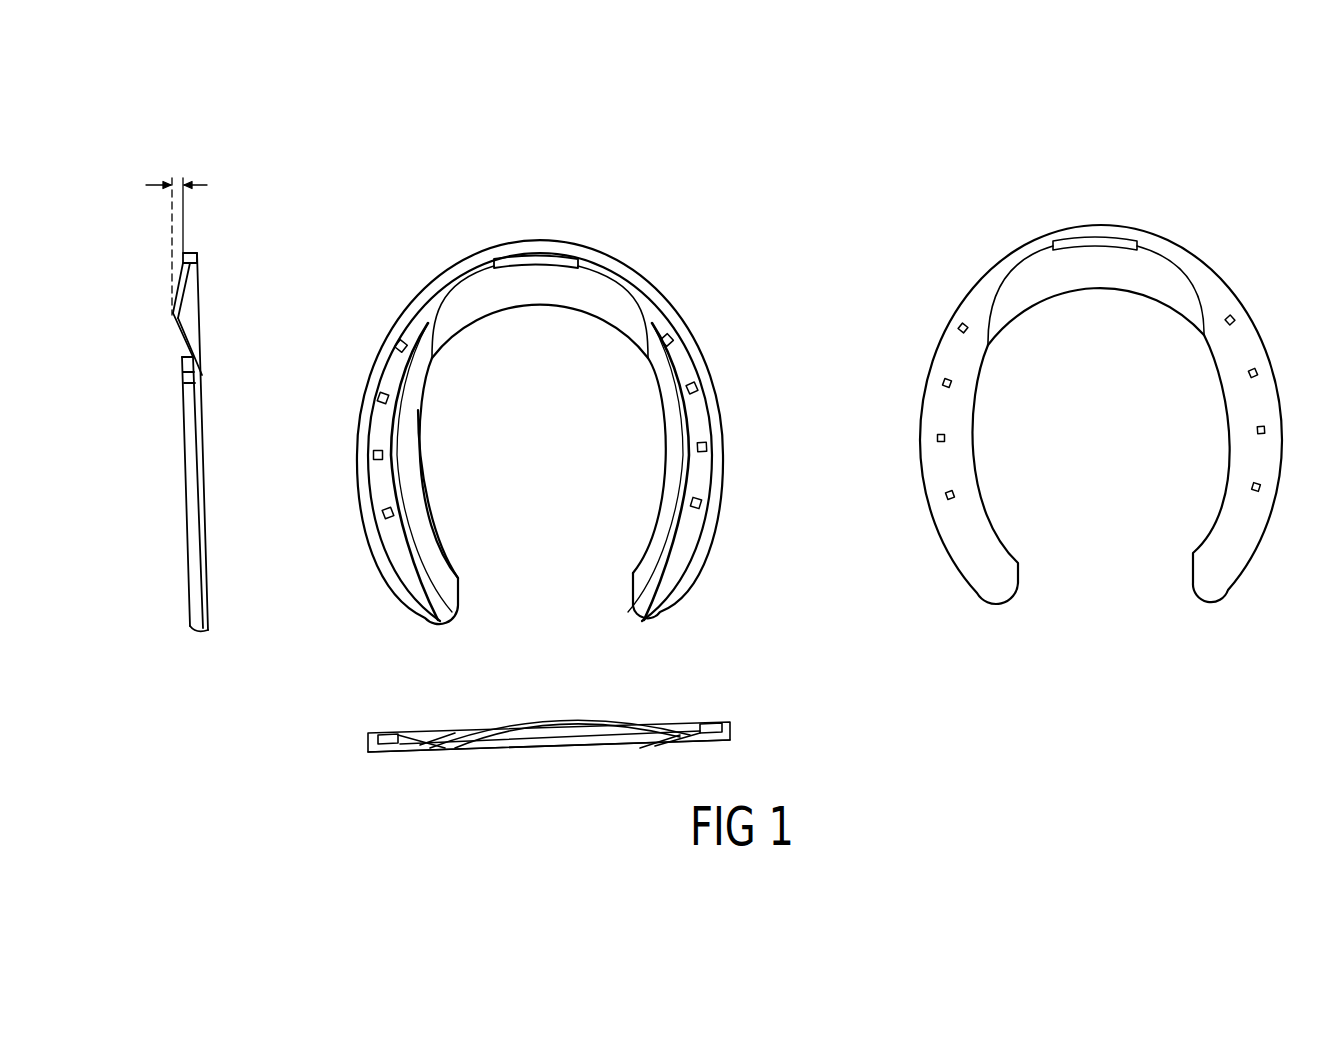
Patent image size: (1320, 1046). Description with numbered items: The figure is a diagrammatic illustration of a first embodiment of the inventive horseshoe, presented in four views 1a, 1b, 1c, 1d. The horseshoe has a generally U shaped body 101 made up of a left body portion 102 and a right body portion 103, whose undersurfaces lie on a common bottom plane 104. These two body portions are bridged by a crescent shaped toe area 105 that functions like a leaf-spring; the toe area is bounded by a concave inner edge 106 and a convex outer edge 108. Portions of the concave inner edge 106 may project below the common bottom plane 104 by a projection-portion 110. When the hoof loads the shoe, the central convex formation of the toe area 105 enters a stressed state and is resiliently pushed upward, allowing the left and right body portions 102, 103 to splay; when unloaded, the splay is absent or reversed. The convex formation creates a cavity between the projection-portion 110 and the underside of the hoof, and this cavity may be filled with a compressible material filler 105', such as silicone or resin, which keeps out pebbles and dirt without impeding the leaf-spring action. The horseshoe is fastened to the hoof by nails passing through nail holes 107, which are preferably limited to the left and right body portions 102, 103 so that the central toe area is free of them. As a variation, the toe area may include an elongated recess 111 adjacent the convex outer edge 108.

The generally U shaped body 101 is at (937, 338).
The left body portion 102 is at (430, 605).
The right body portion 103 is at (680, 602).
The common bottom plane 104 is at (365, 732).
The crescent shaped toe area 105 is at (593, 193).
The compressible material filler 105' is at (239, 319).
The concave inner edge 106 is at (553, 306).
The nail holes 107 is at (938, 438).
The convex outer edge 108 is at (455, 288).
The projection-portion 110 is at (174, 180).
The elongated recess 111 is at (1090, 240).
The view of the first embodiment 1a is at (640, 467).
The view of the first embodiment 1b is at (607, 755).
The view of the first embodiment 1c is at (218, 468).
The view of the first embodiment 1d is at (1205, 395).